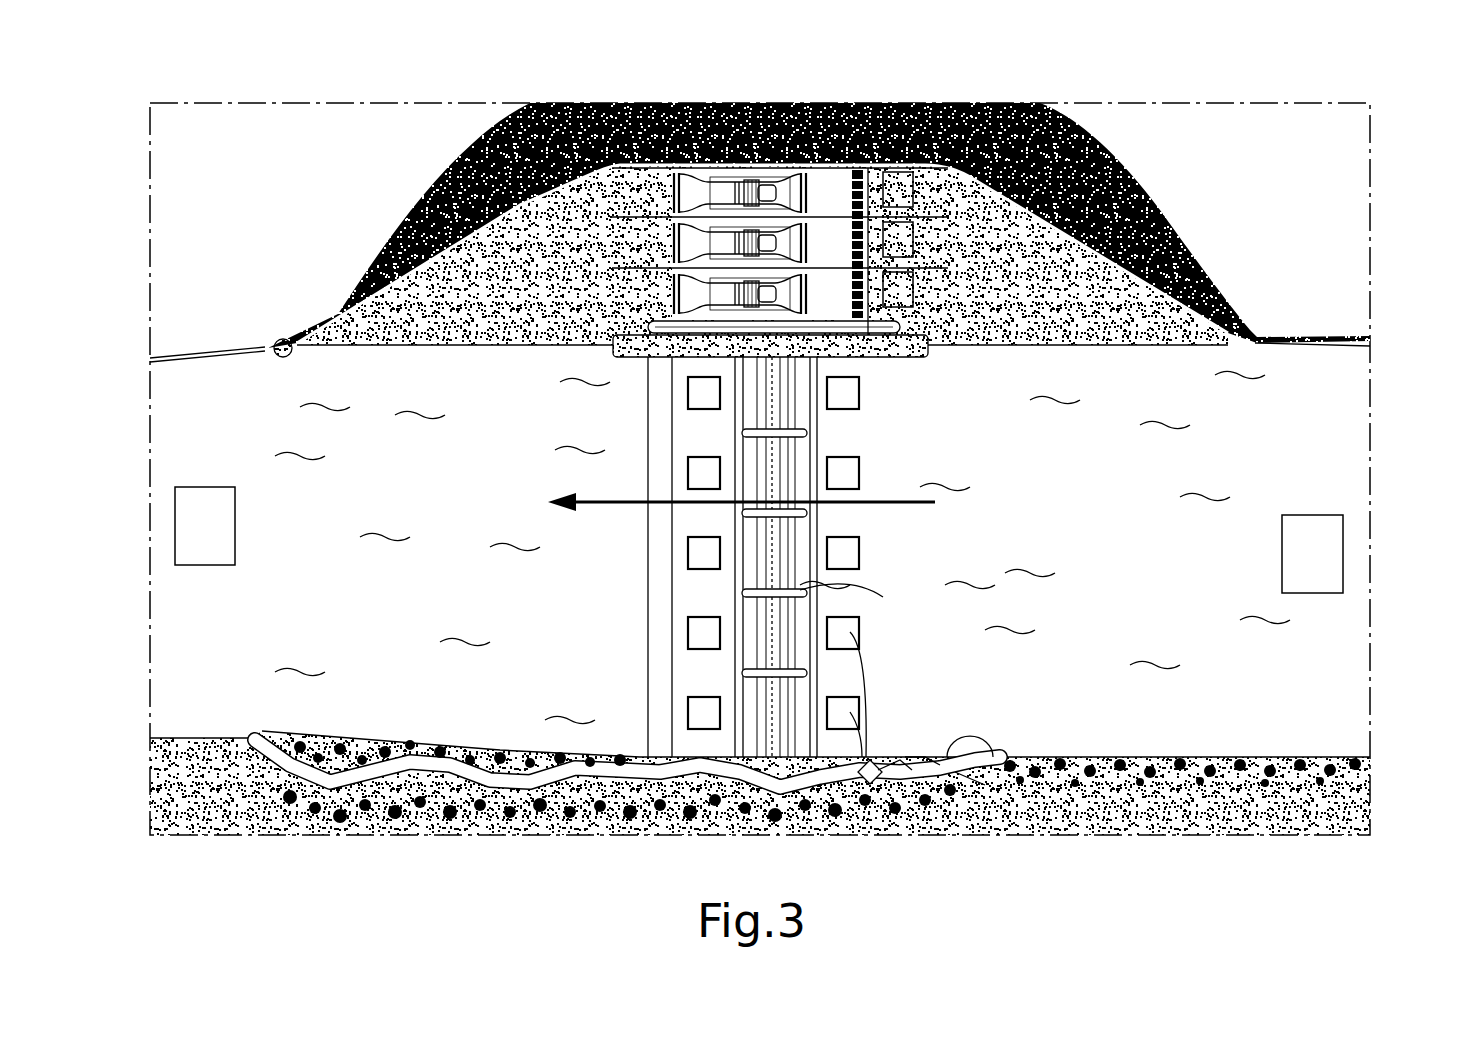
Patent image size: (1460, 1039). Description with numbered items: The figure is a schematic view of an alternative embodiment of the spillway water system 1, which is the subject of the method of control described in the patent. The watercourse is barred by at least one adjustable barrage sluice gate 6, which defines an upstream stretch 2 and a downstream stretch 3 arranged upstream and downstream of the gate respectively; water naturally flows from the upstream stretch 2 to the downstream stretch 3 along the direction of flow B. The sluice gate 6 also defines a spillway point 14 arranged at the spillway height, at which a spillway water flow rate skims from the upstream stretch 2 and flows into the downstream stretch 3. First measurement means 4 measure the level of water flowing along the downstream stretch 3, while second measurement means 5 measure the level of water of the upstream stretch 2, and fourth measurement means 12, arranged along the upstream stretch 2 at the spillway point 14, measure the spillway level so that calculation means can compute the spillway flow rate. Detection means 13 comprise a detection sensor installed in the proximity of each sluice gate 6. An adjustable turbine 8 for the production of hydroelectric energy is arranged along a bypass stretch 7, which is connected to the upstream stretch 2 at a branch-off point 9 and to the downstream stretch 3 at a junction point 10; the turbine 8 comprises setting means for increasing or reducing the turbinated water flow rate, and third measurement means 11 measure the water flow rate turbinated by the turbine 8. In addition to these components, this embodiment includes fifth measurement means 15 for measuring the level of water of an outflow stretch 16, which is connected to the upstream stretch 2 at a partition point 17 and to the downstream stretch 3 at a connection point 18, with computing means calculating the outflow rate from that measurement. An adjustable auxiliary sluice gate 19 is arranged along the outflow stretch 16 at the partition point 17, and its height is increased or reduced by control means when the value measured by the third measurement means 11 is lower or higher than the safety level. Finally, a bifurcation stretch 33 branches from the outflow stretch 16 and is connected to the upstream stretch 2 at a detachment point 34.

The spillway water system 1 is at (1388, 74).
The upstream stretch 2 is at (1340, 668).
The downstream stretch 3 is at (232, 612).
The first measurement means 4 is at (196, 542).
The second measurement means 5 is at (1303, 569).
The adjustable barrage sluice gate 6 is at (630, 172).
The bypass stretch 7 is at (1072, 123).
The adjustable turbine 8 is at (748, 290).
The branch-off point 9 is at (1183, 333).
The junction point 10 is at (340, 283).
The third measurement means 11 is at (925, 330).
The fourth measurement means 12 is at (858, 470).
The detection means 13 is at (693, 398).
The spillway point 14 is at (830, 364).
The fifth measurement means 15 is at (880, 772).
The outflow stretch 16 is at (493, 800).
The partition point 17 is at (950, 770).
The connection point 18 is at (255, 740).
The adjustable auxiliary sluice gate 19 is at (913, 770).
The bifurcation stretch 33 is at (962, 760).
The detachment point 34 is at (883, 597).
The direction of flow B is at (622, 505).